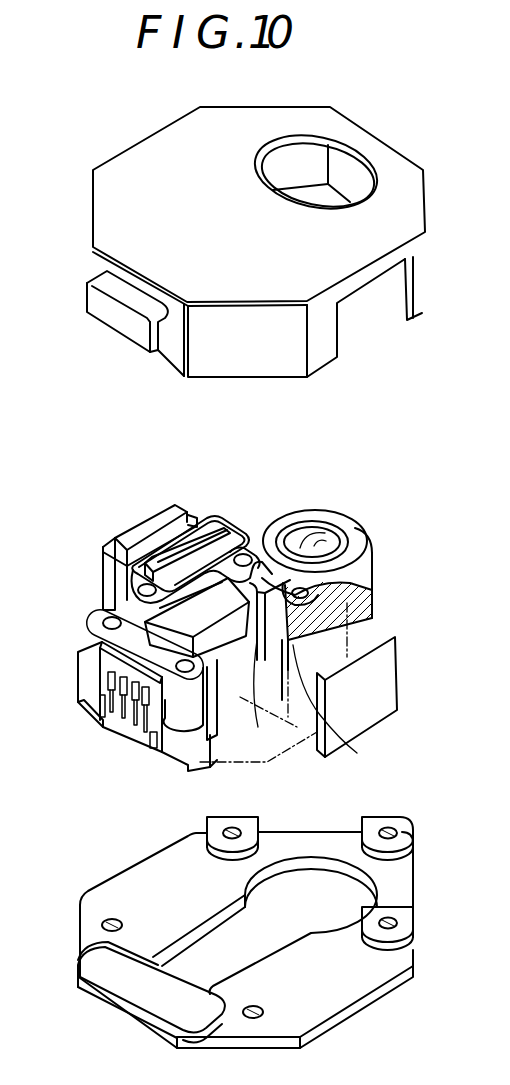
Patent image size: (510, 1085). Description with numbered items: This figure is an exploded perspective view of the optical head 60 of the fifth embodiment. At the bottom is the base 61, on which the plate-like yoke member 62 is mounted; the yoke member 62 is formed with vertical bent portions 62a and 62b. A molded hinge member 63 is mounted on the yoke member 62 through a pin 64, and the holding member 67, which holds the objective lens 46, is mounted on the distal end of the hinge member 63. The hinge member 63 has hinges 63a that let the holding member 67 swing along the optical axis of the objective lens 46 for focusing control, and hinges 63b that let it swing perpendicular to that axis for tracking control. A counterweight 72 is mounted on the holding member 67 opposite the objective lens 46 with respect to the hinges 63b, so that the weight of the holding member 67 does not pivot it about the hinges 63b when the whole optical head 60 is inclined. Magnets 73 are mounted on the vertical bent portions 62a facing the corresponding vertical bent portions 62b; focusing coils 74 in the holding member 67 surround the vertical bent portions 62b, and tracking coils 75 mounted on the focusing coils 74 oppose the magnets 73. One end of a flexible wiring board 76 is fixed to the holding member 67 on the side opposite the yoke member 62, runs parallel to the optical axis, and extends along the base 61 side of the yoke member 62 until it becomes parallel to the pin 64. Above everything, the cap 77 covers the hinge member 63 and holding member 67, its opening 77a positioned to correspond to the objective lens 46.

The objective lens 46 is at (333, 535).
The optical head 60 is at (403, 461).
The base 61 is at (105, 883).
The yoke member 62 is at (87, 674).
The vertical bent portion 62a is at (160, 517).
The vertical bent portion 62b is at (209, 532).
The hinge member 63 is at (140, 600).
The hinge 63a is at (97, 635).
The hinge 63b is at (301, 689).
The pin 64 is at (112, 624).
The holding member 67 is at (363, 568).
The counterweight 72 is at (217, 660).
The magnet 73 is at (150, 535).
The focusing coil 74 is at (223, 518).
The tracking coil 75 is at (192, 533).
The flexible wiring board 76 is at (130, 588).
The cap 77 is at (105, 215).
The opening 77a is at (352, 150).